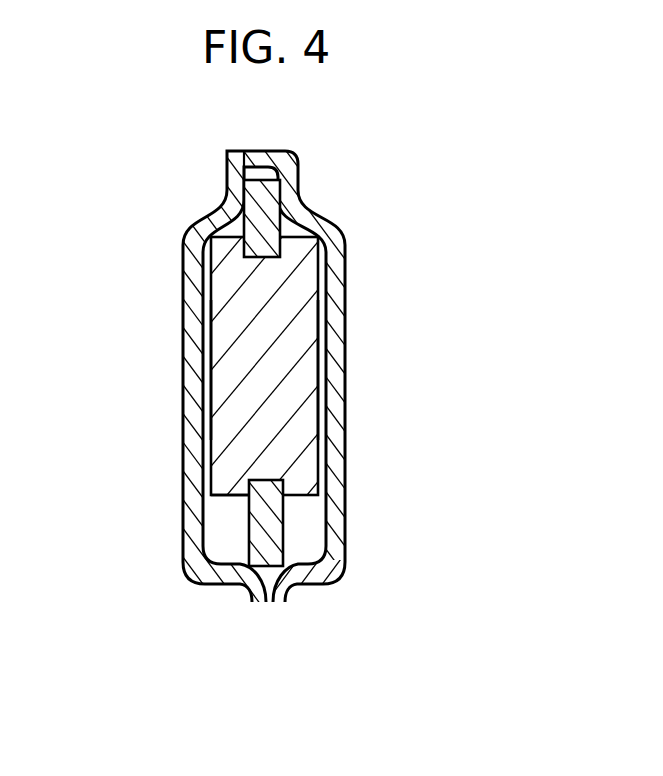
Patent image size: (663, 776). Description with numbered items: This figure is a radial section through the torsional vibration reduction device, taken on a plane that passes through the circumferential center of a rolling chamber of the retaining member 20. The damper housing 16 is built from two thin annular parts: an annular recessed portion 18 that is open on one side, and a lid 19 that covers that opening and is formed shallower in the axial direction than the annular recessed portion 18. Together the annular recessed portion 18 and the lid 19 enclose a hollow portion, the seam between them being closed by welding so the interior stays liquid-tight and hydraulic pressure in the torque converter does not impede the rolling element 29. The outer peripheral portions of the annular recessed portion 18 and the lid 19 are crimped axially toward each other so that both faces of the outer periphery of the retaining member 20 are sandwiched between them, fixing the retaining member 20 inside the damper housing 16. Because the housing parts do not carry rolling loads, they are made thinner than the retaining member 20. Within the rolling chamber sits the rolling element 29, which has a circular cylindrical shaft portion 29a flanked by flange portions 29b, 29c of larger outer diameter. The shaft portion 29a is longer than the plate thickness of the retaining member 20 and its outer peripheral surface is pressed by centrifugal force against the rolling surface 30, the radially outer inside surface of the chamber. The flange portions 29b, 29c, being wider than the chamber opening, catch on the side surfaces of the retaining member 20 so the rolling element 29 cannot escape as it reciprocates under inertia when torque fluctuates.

The damper housing 16 is at (273, 388).
The annular recessed portion 18 is at (272, 388).
The lid 19 is at (192, 357).
The retaining member 20 is at (268, 538).
The rolling element 29 is at (273, 377).
The shaft portion 29a is at (270, 468).
The flange portion 29b is at (225, 437).
The flange portion 29c is at (302, 440).
The rolling surface 30 is at (272, 262).